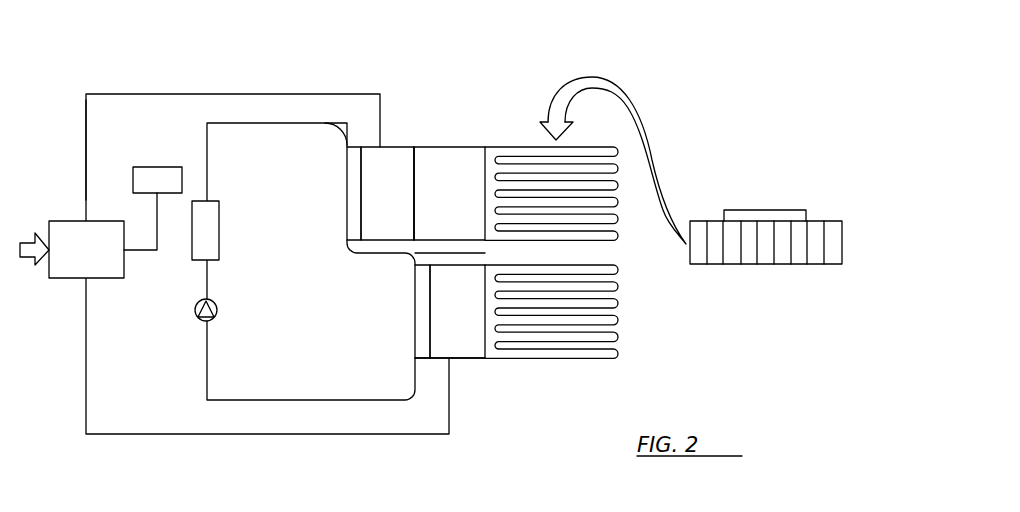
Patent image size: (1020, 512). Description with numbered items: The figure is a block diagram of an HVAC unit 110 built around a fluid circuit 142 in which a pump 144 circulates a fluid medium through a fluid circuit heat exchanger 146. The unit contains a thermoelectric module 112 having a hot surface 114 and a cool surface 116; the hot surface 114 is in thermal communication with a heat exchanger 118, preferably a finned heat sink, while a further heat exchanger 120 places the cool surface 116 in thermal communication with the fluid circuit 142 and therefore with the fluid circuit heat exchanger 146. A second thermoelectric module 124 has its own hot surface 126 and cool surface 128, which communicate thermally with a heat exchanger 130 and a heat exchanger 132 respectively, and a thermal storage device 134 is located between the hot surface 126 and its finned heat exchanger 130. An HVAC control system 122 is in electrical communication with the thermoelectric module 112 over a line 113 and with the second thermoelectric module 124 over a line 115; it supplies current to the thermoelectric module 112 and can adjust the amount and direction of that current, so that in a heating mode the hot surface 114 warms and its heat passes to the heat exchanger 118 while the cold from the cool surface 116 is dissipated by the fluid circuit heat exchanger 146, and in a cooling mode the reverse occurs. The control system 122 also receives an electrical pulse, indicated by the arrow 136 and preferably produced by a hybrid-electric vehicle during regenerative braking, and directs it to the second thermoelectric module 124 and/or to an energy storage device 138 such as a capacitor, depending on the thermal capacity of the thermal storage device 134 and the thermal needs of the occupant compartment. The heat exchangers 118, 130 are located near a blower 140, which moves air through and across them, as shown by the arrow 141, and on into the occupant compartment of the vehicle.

The HVAC unit 110 is at (724, 76).
The thermoelectric module 112 is at (458, 322).
The line 113 is at (86, 395).
The hot surface 114 is at (485, 358).
The line 115 is at (86, 143).
The cool surface 116 is at (428, 342).
The heat exchanger 118 is at (618, 322).
The heat exchanger 120 is at (424, 262).
The HVAC control system 122 is at (72, 221).
The second thermoelectric module 124 is at (387, 190).
The hot surface 126 is at (417, 160).
The cool surface 128 is at (360, 165).
The heat exchanger 130 is at (618, 219).
The heat exchanger 132 is at (357, 145).
The thermal storage device 134 is at (448, 178).
The electrical pulse 136 is at (25, 258).
The energy storage device 138 is at (157, 167).
The blower 140 is at (827, 221).
The arrow 141 is at (592, 77).
The fluid circuit 142 is at (207, 387).
The pump 144 is at (195, 310).
The fluid circuit heat exchanger 146 is at (219, 230).